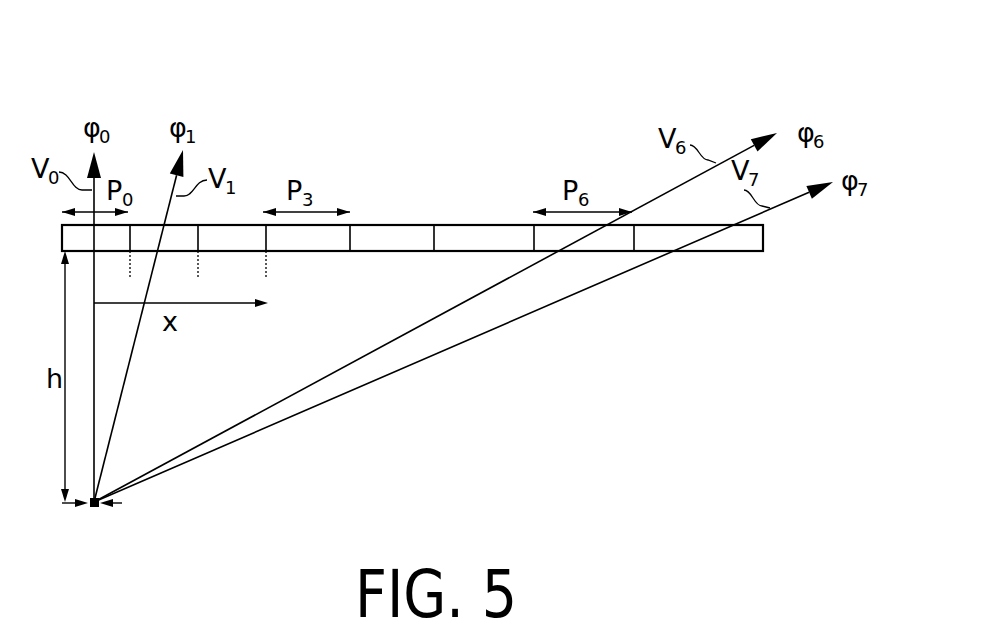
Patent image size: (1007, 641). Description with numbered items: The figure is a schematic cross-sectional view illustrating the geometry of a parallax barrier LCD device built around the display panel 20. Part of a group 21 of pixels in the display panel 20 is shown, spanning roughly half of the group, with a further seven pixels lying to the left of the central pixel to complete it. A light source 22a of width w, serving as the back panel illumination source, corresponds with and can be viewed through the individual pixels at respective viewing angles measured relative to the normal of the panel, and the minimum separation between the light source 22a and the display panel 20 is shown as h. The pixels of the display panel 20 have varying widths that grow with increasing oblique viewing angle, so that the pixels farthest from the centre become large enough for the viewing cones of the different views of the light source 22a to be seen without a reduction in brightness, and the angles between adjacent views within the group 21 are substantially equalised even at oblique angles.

The display panel 20 is at (643, 388).
The group of pixels 21 is at (752, 105).
The light source 22a is at (100, 535).